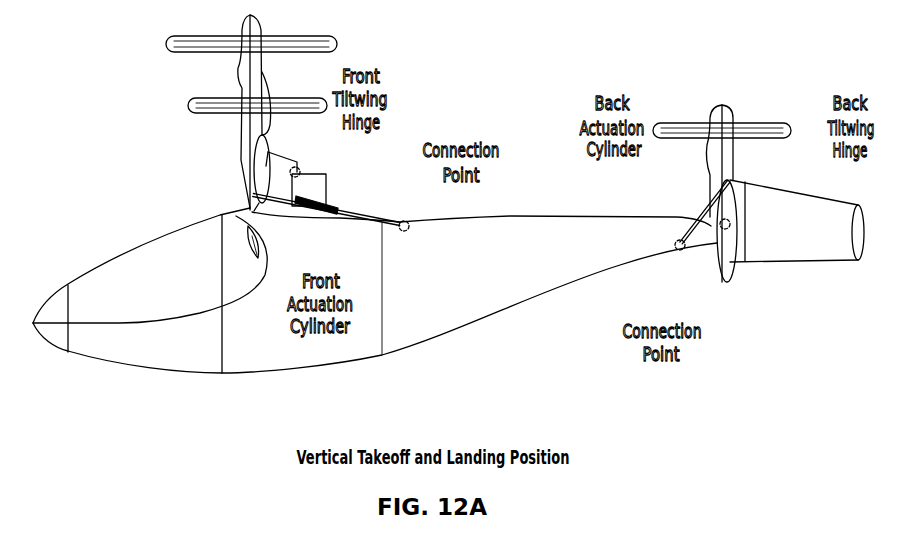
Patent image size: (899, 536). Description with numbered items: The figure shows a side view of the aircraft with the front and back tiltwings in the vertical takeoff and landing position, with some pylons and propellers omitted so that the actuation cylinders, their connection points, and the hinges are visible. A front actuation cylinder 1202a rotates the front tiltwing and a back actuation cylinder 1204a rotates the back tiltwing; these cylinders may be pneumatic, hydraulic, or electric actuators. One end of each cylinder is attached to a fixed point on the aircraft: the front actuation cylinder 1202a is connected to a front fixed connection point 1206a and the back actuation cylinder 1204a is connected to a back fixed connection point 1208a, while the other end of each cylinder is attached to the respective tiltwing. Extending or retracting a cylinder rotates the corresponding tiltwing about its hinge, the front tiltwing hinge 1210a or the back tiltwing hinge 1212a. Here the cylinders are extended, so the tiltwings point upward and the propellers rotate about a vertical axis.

The front actuation cylinder 1202a is at (307, 213).
The back actuation cylinder 1204a is at (704, 211).
The front fixed connection point 1206a is at (406, 218).
The back fixed connection point 1208a is at (682, 253).
The front tiltwing hinge 1210a is at (300, 167).
The back tiltwing hinge 1212a is at (727, 224).